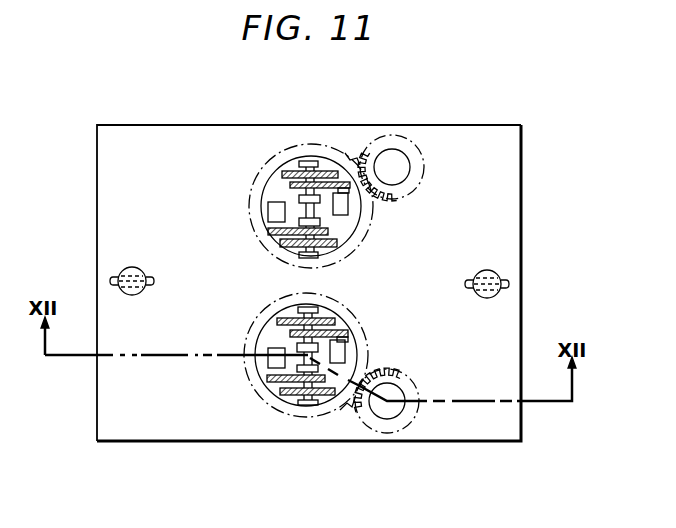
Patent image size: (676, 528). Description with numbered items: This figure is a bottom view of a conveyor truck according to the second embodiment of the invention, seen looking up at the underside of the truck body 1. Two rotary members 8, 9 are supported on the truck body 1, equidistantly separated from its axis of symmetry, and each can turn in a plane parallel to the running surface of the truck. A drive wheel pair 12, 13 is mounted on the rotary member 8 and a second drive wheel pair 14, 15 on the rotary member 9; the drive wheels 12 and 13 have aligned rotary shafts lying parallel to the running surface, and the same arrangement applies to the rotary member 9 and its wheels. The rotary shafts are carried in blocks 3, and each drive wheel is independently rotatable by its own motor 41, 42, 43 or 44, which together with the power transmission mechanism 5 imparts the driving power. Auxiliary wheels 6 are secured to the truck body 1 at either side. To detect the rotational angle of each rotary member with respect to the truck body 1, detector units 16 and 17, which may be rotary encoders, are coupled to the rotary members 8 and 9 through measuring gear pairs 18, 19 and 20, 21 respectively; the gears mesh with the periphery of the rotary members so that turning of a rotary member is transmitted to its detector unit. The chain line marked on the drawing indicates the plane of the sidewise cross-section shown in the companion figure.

The truck body 1 is at (133, 124).
The blocks 3 is at (300, 406).
The power transmission mechanism 5 is at (334, 148).
The auxiliary wheels 6 is at (105, 280).
The rotary member 8 is at (272, 185).
The rotary member 9 is at (358, 351).
The drive wheel 12 is at (297, 172).
The drive wheel 13 is at (372, 232).
The drive wheel 14 is at (276, 320).
The drive wheel 15 is at (279, 389).
The detector unit 16 is at (395, 148).
The detector unit 17 is at (401, 420).
The measuring gear 18 is at (345, 154).
The measuring gear 19 is at (366, 143).
The measuring gear 20 is at (346, 410).
The measuring gear 21 is at (358, 415).
The motor 41 is at (348, 211).
The motor 42 is at (268, 201).
The motor 43 is at (347, 343).
The motor 44 is at (266, 302).